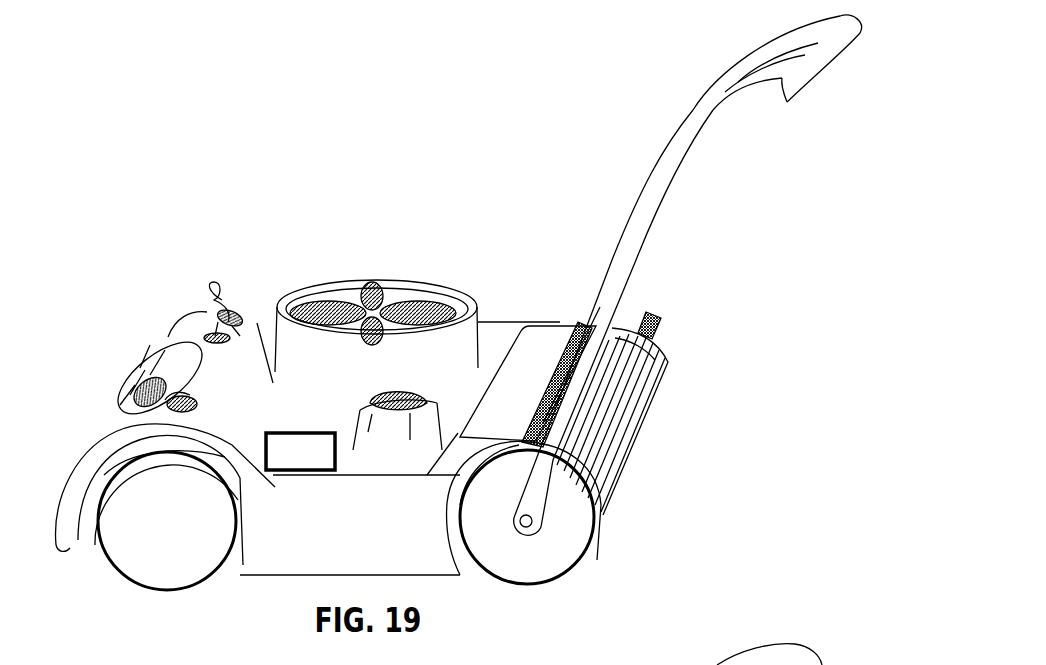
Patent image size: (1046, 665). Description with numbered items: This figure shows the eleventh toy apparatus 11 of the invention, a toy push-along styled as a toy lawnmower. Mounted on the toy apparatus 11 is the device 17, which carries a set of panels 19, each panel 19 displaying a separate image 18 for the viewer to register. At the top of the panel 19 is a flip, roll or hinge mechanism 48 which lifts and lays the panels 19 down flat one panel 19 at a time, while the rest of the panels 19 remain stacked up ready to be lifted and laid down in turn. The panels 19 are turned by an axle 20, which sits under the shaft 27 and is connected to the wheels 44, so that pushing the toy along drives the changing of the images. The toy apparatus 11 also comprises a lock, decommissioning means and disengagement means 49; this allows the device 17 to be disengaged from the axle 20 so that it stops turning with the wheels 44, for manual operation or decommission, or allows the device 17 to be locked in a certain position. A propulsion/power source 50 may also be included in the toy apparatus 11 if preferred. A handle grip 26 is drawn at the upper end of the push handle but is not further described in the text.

The toy apparatus 11 is at (353, 244).
The device 17 is at (603, 202).
The separate image 18 is at (515, 358).
The panel 19 is at (541, 336).
The axle 20 is at (527, 523).
The handle grip 26 is at (813, 58).
The shaft 27 is at (553, 453).
The wheels 44 is at (540, 533).
The flip, roll or hinge mechanism 48 is at (577, 338).
The lock, decommissioning means and disengagement means 49 is at (660, 317).
The propulsion/power source 50 is at (320, 458).